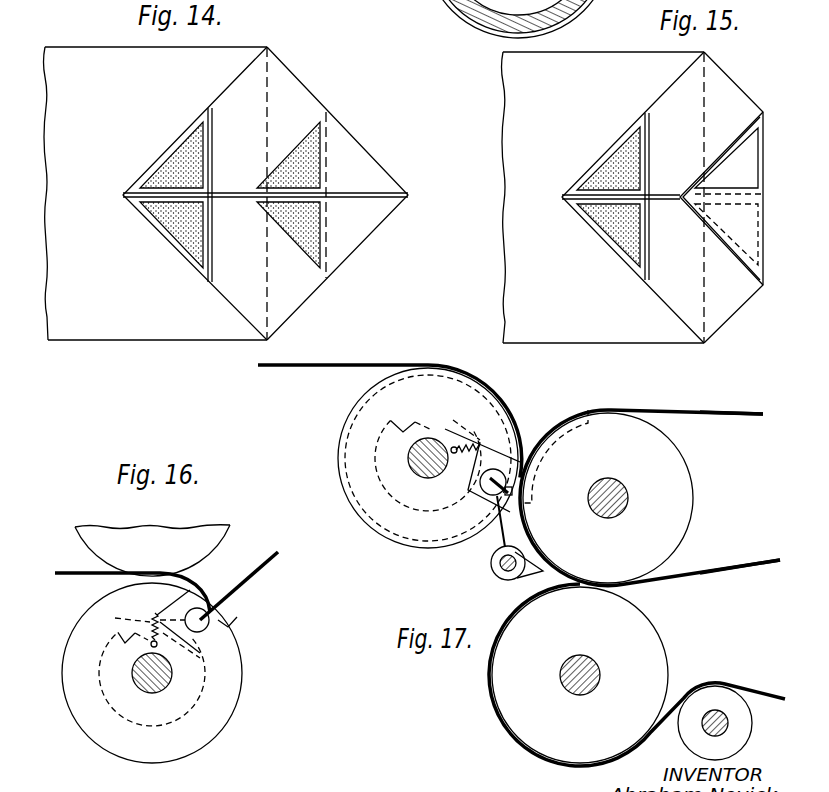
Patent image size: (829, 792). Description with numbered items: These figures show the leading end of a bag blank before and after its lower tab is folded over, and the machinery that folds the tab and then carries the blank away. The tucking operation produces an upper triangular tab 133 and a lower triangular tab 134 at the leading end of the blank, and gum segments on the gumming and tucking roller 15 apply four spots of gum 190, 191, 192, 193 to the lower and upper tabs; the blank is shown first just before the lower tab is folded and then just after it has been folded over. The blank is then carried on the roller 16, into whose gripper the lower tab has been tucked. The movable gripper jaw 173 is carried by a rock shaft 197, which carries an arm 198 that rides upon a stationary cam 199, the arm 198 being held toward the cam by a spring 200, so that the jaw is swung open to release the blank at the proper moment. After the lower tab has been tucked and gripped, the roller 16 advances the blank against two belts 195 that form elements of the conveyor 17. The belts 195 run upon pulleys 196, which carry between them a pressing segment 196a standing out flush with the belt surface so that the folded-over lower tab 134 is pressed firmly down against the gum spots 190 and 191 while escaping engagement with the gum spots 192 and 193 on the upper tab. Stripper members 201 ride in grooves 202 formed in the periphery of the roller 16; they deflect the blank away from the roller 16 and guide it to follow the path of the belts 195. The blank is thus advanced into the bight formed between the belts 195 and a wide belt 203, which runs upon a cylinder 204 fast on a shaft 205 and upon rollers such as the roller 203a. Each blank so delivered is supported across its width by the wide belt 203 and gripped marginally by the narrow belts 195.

In FIG. 16, the gumming and tucking roller 15 is at (182, 518).
In FIG. 16, the roller 16 is at (52, 658).
In FIG. 17, the roller 16 is at (338, 463).
In FIG. 17, the conveyor 17 is at (732, 405).
In FIG. 14, the upper triangular tab 133 is at (216, 103).
In FIG. 15, the upper triangular tab 133 is at (655, 101).
In FIG. 16, the upper triangular tab 133 is at (70, 571).
In FIG. 17, the upper triangular tab 133 is at (442, 362).
In FIG. 14, the lower triangular tab 134 is at (350, 132).
In FIG. 15, the lower triangular tab 134 is at (695, 182).
In FIG. 16, the lower triangular tab 134 is at (257, 567).
In FIG. 17, the lower triangular tab 134 is at (523, 437).
In FIG. 16, the gripper jaw 173 is at (209, 617).
In FIG. 17, the gripper jaw 173 is at (503, 497).
In FIG. 14, the spot of gum 190 is at (300, 152).
In FIG. 15, the spot of gum 190 is at (732, 152).
In FIG. 14, the spot of gum 191 is at (293, 232).
In FIG. 15, the spot of gum 191 is at (732, 248).
In FIG. 14, the spot of gum 192 is at (167, 168).
In FIG. 15, the spot of gum 192 is at (602, 172).
In FIG. 14, the spot of gum 193 is at (165, 222).
In FIG. 15, the spot of gum 193 is at (603, 227).
In FIG. 17, the belts 195 is at (678, 412).
In FIG. 17, the pulleys 196 is at (677, 480).
In FIG. 17, the pressing segment 196a is at (558, 435).
In FIG. 16, the rock shaft 197 is at (200, 638).
In FIG. 17, the rock shaft 197 is at (482, 462).
In FIG. 16, the arm 198 is at (153, 616).
In FIG. 17, the arm 198 is at (477, 433).
In FIG. 16, the stationary cam 199 is at (125, 713).
In FIG. 17, the stationary cam 199 is at (401, 502).
In FIG. 16, the spring 200 is at (138, 616).
In FIG. 17, the spring 200 is at (460, 437).
In FIG. 17, the stripper members 201 is at (500, 538).
In FIG. 17, the grooves 202 is at (350, 423).
In FIG. 17, the wide belt 203 is at (700, 577).
In FIG. 17, the roller 203a is at (745, 728).
In FIG. 17, the cylinder 204 is at (657, 660).
In FIG. 17, the shaft 205 is at (582, 657).